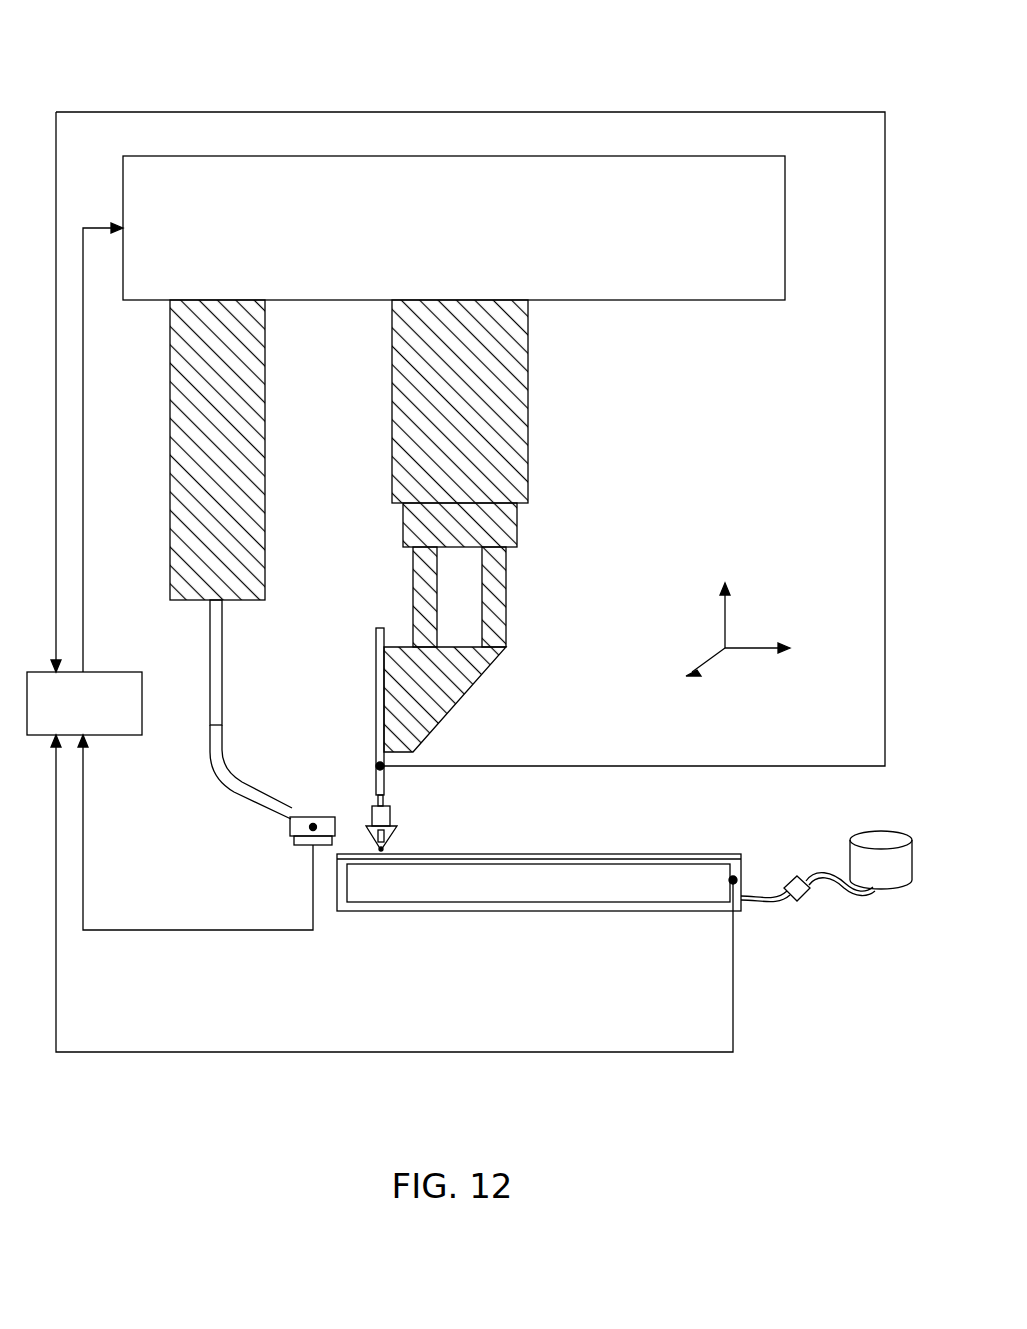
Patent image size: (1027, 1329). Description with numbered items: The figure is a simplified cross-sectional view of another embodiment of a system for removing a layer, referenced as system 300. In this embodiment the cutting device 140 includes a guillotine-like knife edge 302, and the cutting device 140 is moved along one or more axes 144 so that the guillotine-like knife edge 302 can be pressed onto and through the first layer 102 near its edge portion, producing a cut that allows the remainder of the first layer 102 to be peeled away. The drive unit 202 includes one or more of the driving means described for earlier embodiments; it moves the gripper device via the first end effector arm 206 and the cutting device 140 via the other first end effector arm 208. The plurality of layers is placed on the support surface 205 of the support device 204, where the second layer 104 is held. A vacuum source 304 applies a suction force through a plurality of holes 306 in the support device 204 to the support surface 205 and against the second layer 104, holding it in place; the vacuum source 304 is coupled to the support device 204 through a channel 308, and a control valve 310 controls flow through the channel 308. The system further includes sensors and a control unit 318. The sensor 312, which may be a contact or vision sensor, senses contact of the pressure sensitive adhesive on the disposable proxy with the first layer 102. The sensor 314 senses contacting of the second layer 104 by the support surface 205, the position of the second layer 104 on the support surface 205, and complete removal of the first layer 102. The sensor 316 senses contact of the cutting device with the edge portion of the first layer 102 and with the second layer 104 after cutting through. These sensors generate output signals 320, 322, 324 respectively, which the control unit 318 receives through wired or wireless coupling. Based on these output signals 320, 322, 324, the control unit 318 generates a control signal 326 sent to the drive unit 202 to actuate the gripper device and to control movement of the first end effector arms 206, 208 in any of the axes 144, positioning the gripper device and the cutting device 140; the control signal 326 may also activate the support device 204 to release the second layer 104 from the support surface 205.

The system for removing a layer 300 is at (130, 70).
The output signal 320 is at (885, 410).
The control signal 326 is at (86, 533).
The control unit 318 is at (122, 672).
The output signal 322 is at (642, 1052).
The output signal 324 is at (86, 840).
The drive unit 202 is at (673, 300).
The first end effector arm 208 is at (170, 417).
The first end effector arm 206 is at (392, 380).
The sensor 312 is at (384, 786).
The cutting device 140 is at (355, 805).
The sensor 316 is at (313, 817).
The guillotine-like knife edge 302 is at (304, 845).
The support device 204 is at (534, 921).
The plurality of holes 306 is at (595, 903).
The first layer 102 is at (620, 854).
The second layer 104 is at (706, 854).
The support surface 205 is at (745, 856).
The sensor 314 is at (713, 903).
The channel 308 is at (838, 896).
The control valve 310 is at (788, 901).
The vacuum source 304 is at (900, 888).
The axes 144 is at (762, 615).